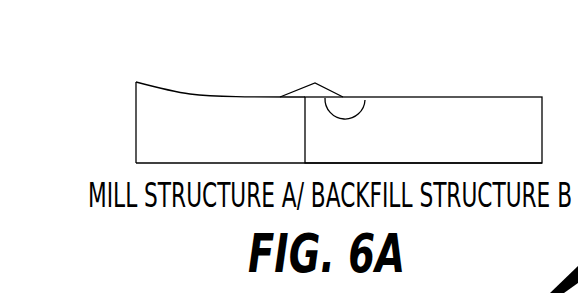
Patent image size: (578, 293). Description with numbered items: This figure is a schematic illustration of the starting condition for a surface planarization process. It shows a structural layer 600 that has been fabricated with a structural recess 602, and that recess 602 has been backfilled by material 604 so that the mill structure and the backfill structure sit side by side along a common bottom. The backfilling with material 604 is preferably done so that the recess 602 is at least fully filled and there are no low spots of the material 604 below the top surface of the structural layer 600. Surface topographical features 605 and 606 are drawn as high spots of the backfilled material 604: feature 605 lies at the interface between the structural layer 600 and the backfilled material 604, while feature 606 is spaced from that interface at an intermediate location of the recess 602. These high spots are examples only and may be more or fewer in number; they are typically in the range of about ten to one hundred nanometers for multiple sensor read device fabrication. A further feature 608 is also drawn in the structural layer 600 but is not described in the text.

The structural layer 600 is at (470, 121).
The structural recess 602 is at (135, 171).
The backfilled material 604 is at (180, 110).
The surface topographical feature 605 is at (315, 83).
The surface topographical feature 606 is at (137, 82).
The notch in mill structure 608 is at (363, 108).